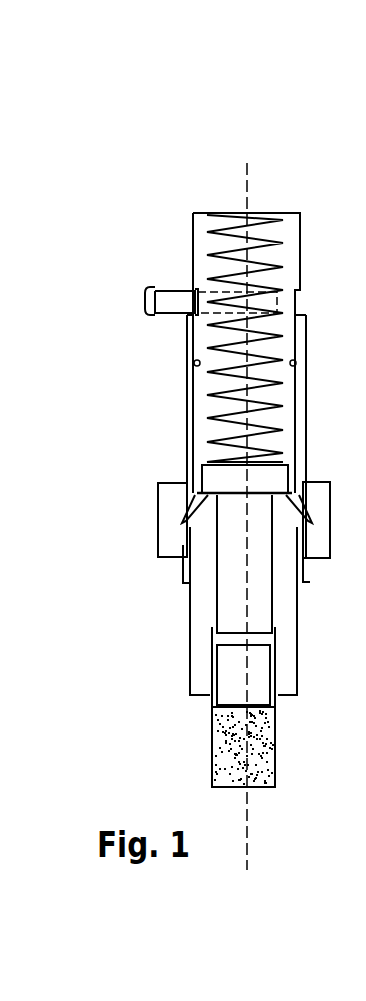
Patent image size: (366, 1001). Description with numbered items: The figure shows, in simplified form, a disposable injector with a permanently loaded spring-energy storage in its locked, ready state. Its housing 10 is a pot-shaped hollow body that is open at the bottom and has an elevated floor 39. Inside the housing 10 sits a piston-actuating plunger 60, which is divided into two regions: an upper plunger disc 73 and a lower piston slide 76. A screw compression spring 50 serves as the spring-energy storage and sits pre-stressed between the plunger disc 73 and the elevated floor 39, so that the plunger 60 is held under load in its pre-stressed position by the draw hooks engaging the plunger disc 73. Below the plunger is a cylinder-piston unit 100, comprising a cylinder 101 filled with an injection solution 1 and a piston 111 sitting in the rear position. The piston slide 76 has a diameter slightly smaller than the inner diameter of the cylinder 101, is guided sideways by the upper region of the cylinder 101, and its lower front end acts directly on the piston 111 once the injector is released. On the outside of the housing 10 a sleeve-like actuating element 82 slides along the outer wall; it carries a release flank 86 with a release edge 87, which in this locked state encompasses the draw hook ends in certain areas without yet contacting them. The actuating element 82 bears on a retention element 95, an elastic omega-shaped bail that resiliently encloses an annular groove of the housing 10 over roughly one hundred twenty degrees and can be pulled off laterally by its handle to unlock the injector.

The injection solution 1 is at (227, 760).
The housing 10 is at (190, 623).
The elevated floor 39 is at (195, 213).
The screw compression spring 50 is at (227, 255).
The piston-actuating plunger 60 is at (193, 470).
The plunger disc 73 is at (212, 487).
The piston slide 76 is at (228, 577).
The actuating element 82 is at (187, 340).
The release flank 86 is at (187, 548).
The release edge 87 is at (184, 529).
The retention element 95 is at (157, 303).
The cylinder-piston unit 100 is at (209, 735).
The cylinder 101 is at (210, 750).
The piston 111 is at (228, 677).